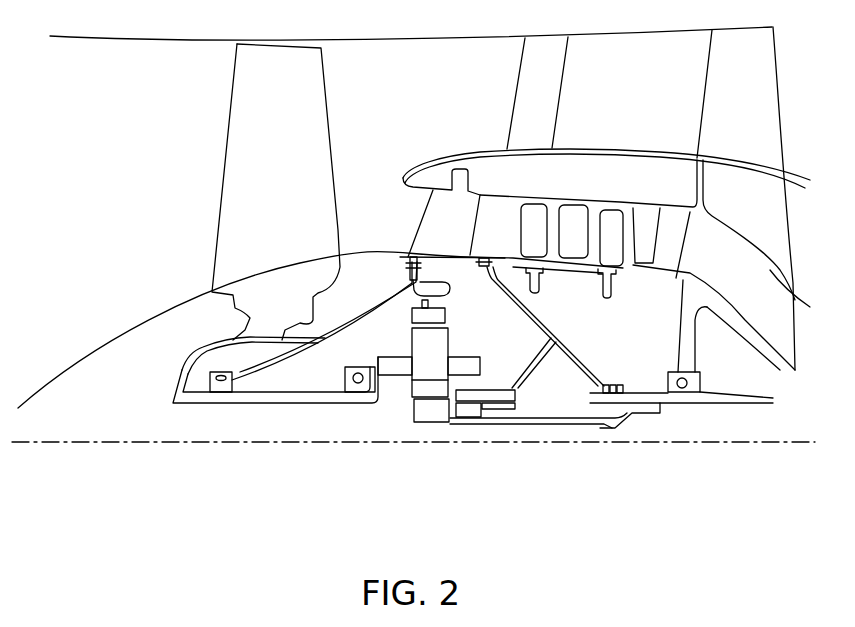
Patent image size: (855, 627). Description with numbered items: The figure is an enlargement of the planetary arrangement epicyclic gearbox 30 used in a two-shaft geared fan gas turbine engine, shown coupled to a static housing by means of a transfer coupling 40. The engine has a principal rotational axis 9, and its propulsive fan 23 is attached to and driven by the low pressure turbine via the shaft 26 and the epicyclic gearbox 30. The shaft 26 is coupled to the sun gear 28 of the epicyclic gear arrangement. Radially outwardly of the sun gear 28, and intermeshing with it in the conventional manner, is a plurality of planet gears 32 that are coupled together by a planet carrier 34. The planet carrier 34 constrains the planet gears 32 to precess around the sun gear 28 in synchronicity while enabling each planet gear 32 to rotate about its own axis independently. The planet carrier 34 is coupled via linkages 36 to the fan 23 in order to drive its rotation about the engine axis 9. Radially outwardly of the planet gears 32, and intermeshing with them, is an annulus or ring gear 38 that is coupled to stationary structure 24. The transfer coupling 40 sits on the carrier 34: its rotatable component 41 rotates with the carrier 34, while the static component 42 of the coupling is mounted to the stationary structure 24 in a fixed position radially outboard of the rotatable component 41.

The principal rotational axis 9 is at (185, 443).
The propulsive fan 23 is at (219, 208).
The stationary structure 24 is at (438, 222).
The shaft 26 is at (668, 402).
The sun gear 28 is at (432, 415).
The epicyclic gearbox 30 is at (397, 400).
The planet gears 32 is at (413, 397).
The planet carrier 34 is at (365, 362).
The linkages 36 is at (393, 400).
The ring gear 38 is at (423, 317).
The transfer coupling 40 is at (485, 385).
The rotatable component 41 is at (473, 415).
The static component 42 is at (482, 407).